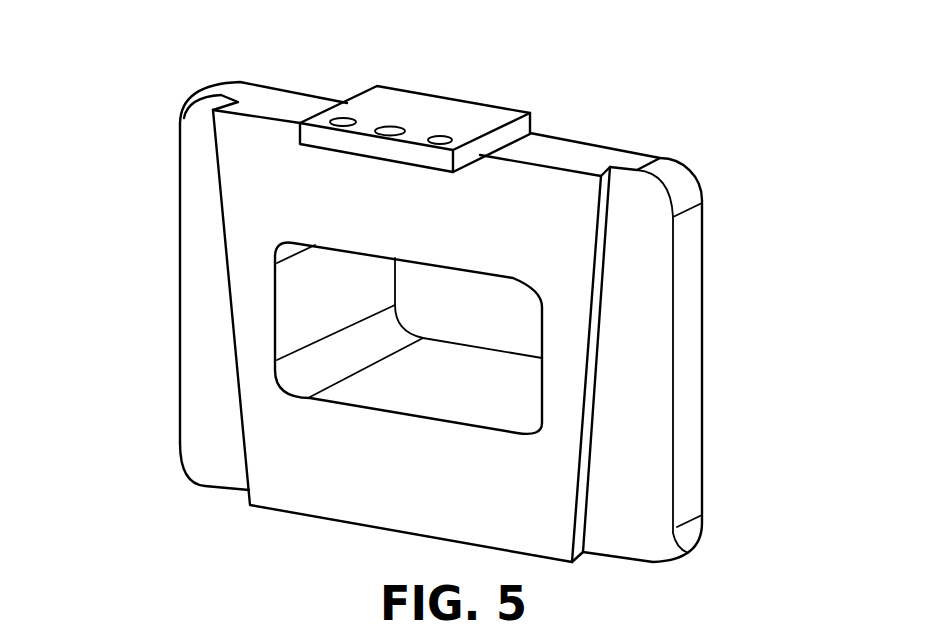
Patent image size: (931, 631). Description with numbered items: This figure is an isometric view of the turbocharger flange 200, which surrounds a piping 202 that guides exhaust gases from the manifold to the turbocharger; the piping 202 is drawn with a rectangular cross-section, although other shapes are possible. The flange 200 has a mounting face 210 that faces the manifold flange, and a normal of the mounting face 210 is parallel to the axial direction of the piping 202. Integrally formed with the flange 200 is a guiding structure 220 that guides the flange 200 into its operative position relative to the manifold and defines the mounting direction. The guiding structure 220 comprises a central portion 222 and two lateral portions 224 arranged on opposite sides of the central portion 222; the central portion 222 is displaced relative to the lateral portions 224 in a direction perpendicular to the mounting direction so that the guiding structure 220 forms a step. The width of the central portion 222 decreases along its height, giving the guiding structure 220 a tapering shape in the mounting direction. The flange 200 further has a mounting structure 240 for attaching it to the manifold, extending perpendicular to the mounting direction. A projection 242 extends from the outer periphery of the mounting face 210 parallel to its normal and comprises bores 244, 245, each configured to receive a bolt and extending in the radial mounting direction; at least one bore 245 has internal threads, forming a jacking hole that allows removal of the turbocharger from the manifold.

The turbocharger flange 200 is at (635, 342).
The piping 202 is at (432, 382).
The mounting face 210 is at (433, 495).
The guiding structure 220 is at (227, 275).
The central portion 222 is at (543, 520).
The lateral portions 224 is at (213, 408).
The mounting structure 240 is at (490, 120).
The projection 242 is at (343, 144).
The bore 244 is at (390, 131).
The bore 245 is at (350, 115).